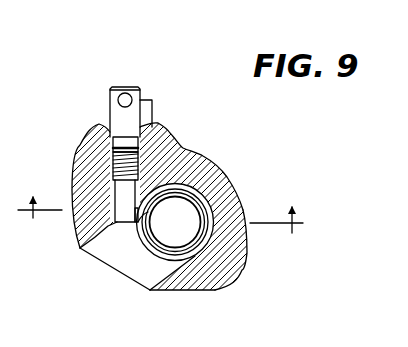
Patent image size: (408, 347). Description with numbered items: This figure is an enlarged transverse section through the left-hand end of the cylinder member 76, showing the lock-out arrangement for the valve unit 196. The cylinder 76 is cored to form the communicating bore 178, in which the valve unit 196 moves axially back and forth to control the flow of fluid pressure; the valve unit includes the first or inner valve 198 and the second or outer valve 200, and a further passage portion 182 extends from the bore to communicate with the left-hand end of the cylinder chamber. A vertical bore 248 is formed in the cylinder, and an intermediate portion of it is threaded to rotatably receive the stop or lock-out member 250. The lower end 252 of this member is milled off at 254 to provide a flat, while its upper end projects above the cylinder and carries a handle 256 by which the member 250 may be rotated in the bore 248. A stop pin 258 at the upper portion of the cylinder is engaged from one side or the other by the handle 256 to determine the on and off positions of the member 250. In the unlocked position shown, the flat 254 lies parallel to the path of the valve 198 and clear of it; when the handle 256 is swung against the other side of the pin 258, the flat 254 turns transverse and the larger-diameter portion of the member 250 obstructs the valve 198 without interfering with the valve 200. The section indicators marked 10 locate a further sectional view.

The cylinder member 76 is at (235, 277).
The inner valve 198 is at (198, 162).
The passage portion 182 is at (144, 282).
The lower end 252 is at (93, 255).
The valve unit 196 is at (168, 233).
The outer valve 200 is at (200, 190).
The communicating bore 178 is at (185, 213).
The lock-out member 250 is at (115, 108).
The handle 256 is at (125, 93).
The stop pin 258 is at (152, 110).
The vertical bore 248 is at (112, 145).
The flat 254 is at (117, 222).
The section line 10- 10 is at (161, 226).